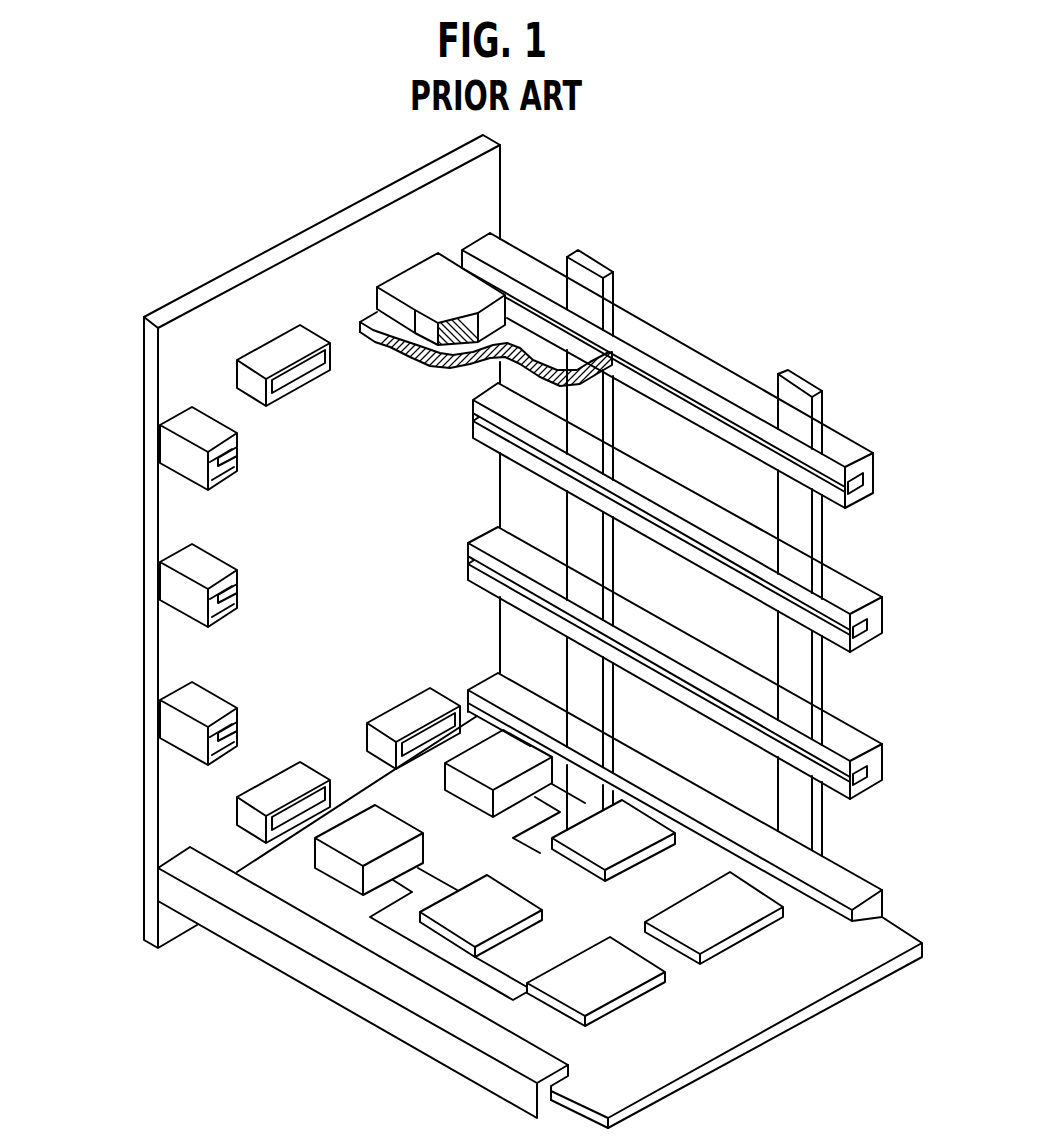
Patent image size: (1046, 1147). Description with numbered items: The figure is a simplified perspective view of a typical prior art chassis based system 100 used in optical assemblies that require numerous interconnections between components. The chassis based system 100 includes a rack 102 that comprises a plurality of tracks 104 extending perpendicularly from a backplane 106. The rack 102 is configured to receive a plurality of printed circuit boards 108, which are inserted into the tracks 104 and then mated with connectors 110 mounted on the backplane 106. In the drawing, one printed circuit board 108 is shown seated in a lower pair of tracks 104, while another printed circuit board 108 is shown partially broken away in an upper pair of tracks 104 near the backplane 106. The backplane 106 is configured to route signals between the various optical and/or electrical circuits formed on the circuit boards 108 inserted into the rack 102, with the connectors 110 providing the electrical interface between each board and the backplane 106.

The chassis based system 100 is at (186, 1030).
The rack 102 is at (704, 302).
The tracks 104 is at (723, 367).
The backplane 106 is at (143, 422).
The printed circuit boards 108 is at (532, 340).
The connectors 110 is at (365, 740).